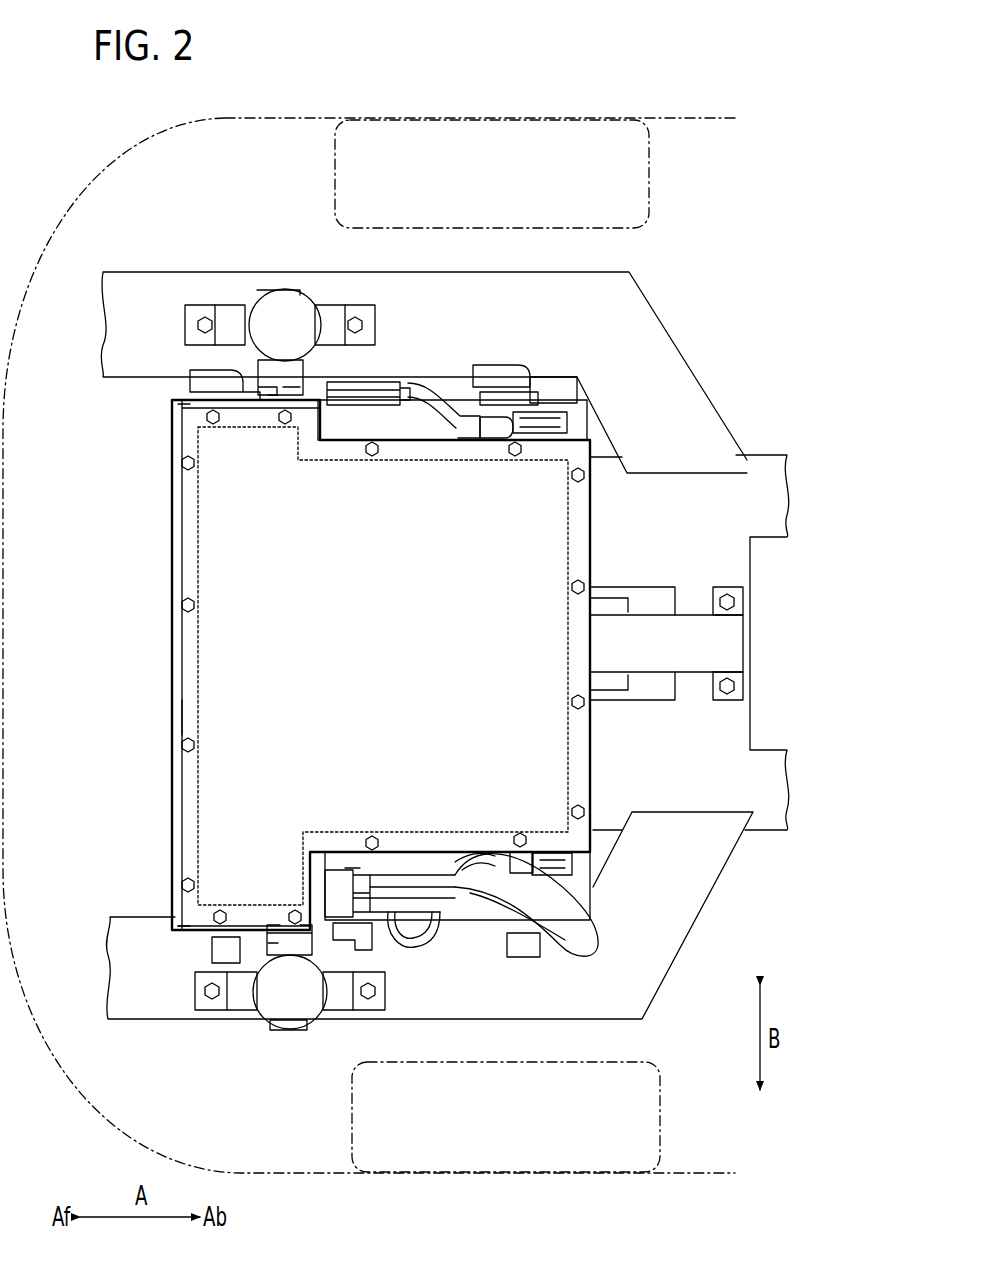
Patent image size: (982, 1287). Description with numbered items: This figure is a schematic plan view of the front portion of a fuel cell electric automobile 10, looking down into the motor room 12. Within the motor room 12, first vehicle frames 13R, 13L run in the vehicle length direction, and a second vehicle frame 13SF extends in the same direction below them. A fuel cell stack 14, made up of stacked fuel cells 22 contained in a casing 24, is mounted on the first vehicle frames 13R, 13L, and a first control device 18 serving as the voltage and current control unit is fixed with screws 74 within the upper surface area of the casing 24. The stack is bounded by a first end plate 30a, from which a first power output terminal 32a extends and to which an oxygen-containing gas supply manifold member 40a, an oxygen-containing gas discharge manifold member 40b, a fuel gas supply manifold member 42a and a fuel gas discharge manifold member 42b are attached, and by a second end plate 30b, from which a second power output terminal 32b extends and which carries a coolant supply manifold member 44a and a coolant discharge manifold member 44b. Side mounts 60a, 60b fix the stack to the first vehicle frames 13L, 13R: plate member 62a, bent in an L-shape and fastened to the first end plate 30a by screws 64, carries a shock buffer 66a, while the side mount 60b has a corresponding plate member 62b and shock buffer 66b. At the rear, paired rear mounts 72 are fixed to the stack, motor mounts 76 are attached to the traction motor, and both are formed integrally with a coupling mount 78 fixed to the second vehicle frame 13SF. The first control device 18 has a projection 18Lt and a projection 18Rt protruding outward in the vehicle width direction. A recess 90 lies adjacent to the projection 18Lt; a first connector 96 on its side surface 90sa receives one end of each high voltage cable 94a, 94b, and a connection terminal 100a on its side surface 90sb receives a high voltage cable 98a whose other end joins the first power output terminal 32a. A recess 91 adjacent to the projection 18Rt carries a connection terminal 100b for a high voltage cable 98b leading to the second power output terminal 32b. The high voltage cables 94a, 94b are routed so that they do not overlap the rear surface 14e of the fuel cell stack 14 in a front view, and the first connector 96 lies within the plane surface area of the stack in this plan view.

The fuel cell electric automobile 10 is at (680, 79).
The motor room 12 is at (280, 135).
The first vehicle frame 13R is at (133, 288).
The first vehicle frame 13L is at (140, 1010).
The second vehicle frame 13SF is at (620, 567).
The fuel cell stack 14 is at (172, 648).
The rear surface 14e is at (593, 770).
The first control device 18 is at (583, 533).
The projection 18Rt is at (178, 432).
The projection 18Lt is at (225, 870).
The fuel cells 22 is at (243, 626).
The casing 24 is at (175, 718).
The first end plate 30a is at (522, 1045).
The second end plate 30b is at (567, 397).
The first power output terminal 32a is at (340, 1015).
The second power output terminal 32b is at (343, 412).
The oxygen-containing gas supply manifold member 40a is at (525, 960).
The oxygen-containing gas discharge manifold member 40b is at (147, 916).
The fuel gas supply manifold member 42a is at (560, 998).
The fuel gas discharge manifold member 42b is at (205, 950).
The coolant supply manifold member 44a is at (500, 378).
The coolant discharge manifold member 44b is at (222, 392).
The side mount 60a is at (290, 1032).
The side mount 60b is at (254, 297).
The plate member 62a is at (270, 1013).
The plate member 62b is at (262, 370).
The screws 64 is at (272, 402).
The shock buffer 66a is at (294, 1012).
The shock buffer 66b is at (283, 318).
The rear mounts 72 is at (608, 690).
The screws 74 is at (183, 463).
The motor mounts 76 is at (652, 692).
The coupling mount 78 is at (692, 671).
The recess 90 is at (385, 950).
The side surface 90sa is at (340, 870).
The side surface 90sb is at (470, 905).
The recess 91 is at (460, 430).
The high voltage cable 94a is at (600, 932).
The high voltage cable 94b is at (478, 878).
The first connector 96 is at (352, 870).
The high voltage cable 98a is at (430, 950).
The high voltage cable 98b is at (447, 422).
The connection terminal 100a is at (530, 880).
The connection terminal 100b is at (558, 410).